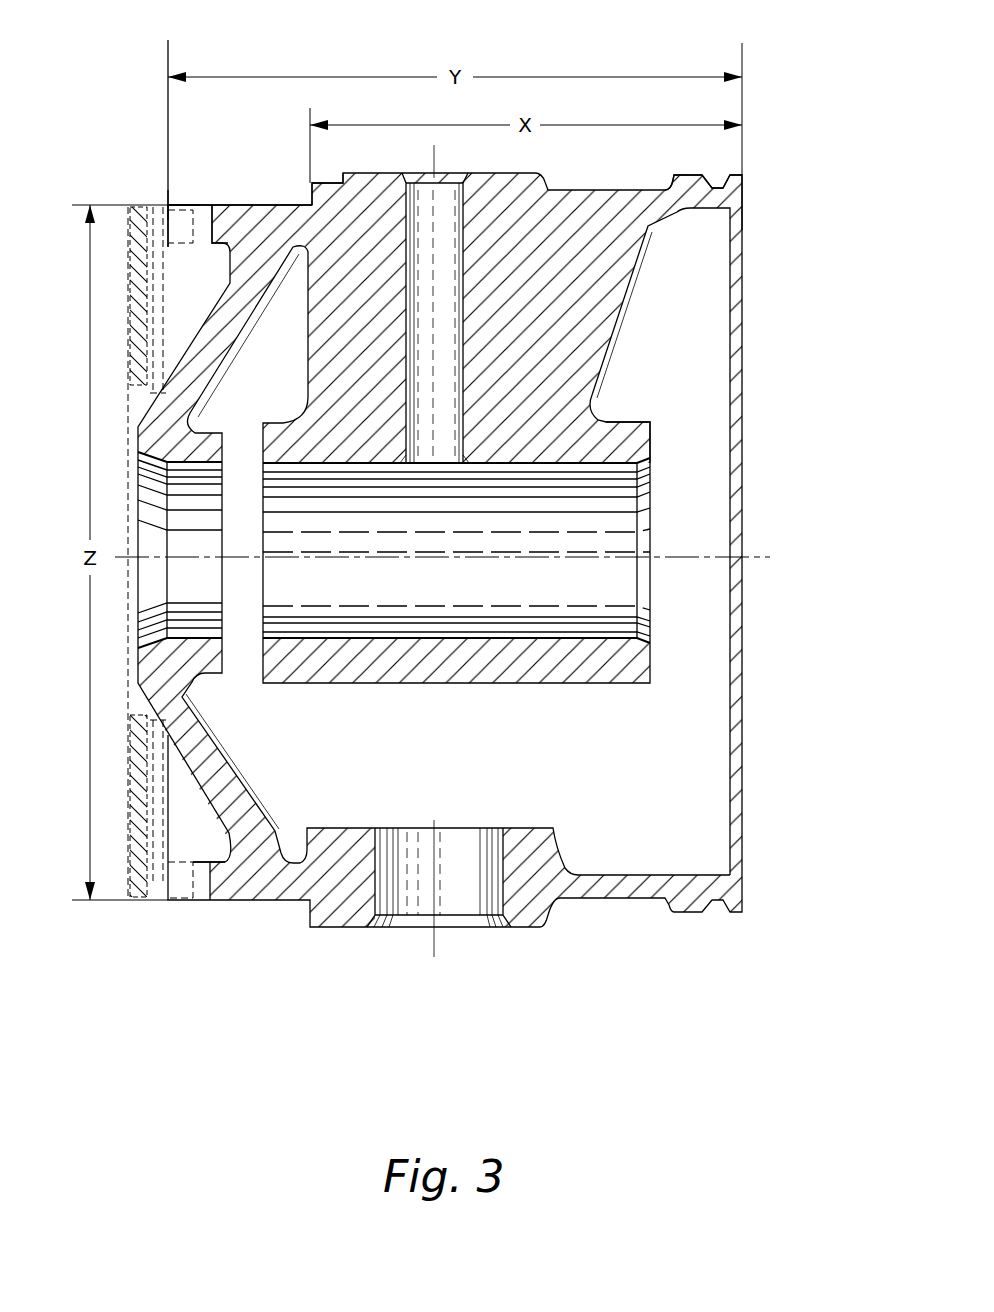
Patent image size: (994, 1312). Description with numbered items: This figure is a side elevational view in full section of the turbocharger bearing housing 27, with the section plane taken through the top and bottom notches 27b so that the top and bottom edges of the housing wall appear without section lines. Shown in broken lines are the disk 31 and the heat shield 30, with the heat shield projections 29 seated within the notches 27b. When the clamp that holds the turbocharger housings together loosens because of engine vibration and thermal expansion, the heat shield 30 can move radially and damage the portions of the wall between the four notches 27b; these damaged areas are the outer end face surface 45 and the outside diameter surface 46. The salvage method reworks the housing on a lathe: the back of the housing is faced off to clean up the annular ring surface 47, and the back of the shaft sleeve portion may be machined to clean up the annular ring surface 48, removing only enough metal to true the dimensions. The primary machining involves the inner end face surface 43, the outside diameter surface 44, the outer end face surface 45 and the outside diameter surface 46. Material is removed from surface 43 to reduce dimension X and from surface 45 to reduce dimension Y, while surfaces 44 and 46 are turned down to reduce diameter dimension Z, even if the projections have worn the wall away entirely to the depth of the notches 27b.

The bearing housing 27 is at (125, 116).
The notches 27b is at (203, 222).
The heat shield projections 29 is at (178, 240).
The heat shield 30 is at (133, 863).
The disk 31 is at (157, 850).
The inner end face surface 43 is at (311, 184).
The outside diameter surface 44 is at (253, 203).
The outer end face surface 45 is at (172, 228).
The outside diameter surface 46 is at (168, 203).
The annular ring surface 47 is at (744, 190).
The annular ring surface 48 is at (653, 438).